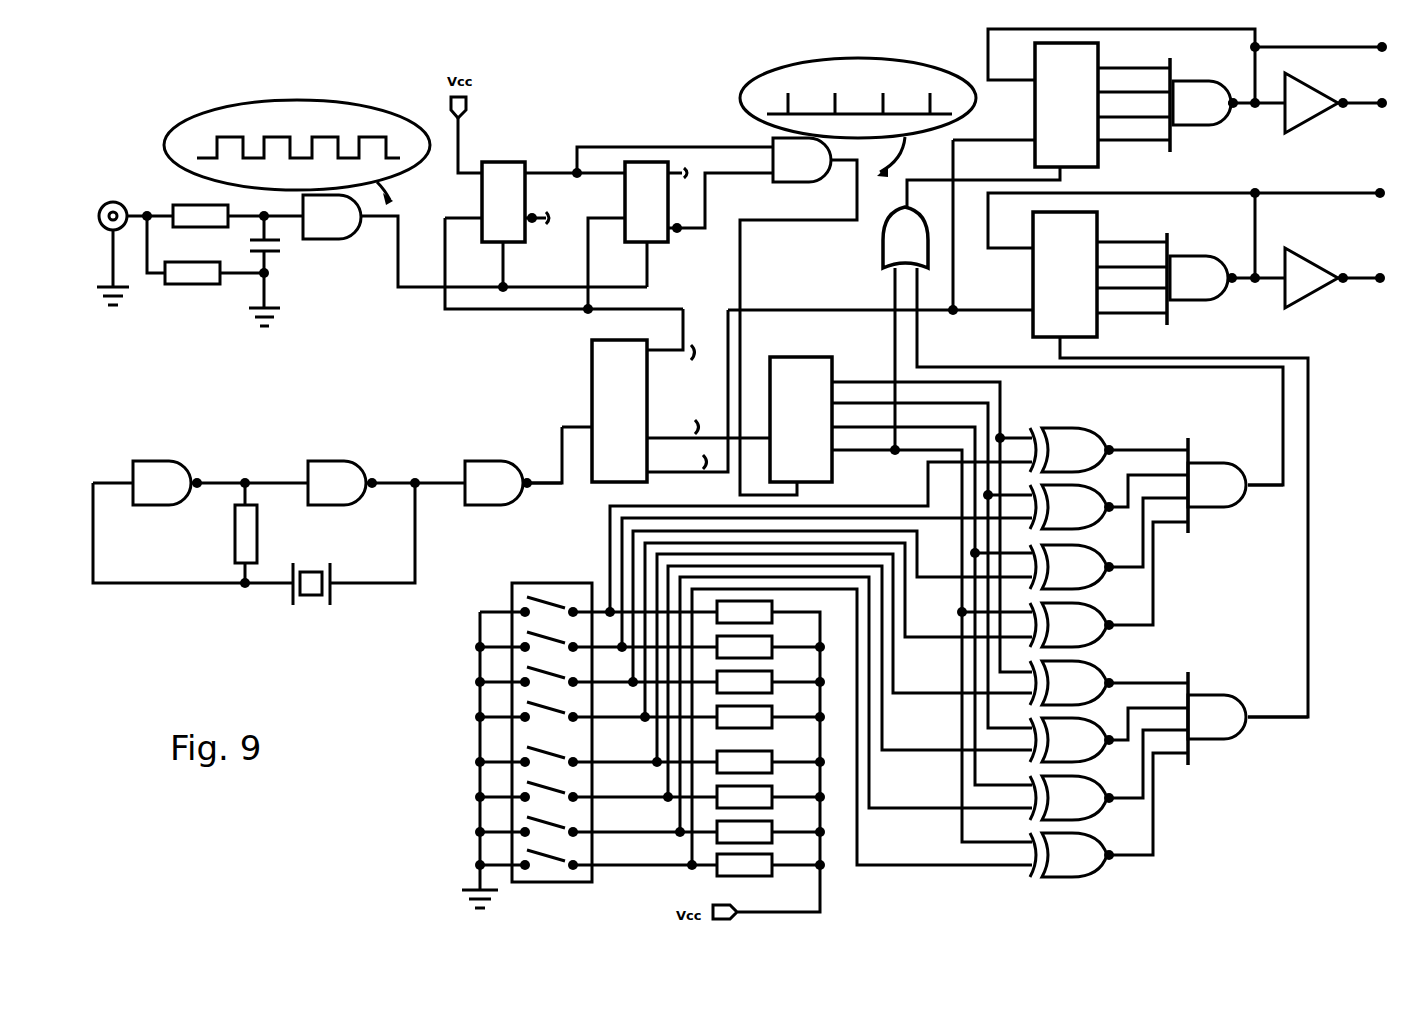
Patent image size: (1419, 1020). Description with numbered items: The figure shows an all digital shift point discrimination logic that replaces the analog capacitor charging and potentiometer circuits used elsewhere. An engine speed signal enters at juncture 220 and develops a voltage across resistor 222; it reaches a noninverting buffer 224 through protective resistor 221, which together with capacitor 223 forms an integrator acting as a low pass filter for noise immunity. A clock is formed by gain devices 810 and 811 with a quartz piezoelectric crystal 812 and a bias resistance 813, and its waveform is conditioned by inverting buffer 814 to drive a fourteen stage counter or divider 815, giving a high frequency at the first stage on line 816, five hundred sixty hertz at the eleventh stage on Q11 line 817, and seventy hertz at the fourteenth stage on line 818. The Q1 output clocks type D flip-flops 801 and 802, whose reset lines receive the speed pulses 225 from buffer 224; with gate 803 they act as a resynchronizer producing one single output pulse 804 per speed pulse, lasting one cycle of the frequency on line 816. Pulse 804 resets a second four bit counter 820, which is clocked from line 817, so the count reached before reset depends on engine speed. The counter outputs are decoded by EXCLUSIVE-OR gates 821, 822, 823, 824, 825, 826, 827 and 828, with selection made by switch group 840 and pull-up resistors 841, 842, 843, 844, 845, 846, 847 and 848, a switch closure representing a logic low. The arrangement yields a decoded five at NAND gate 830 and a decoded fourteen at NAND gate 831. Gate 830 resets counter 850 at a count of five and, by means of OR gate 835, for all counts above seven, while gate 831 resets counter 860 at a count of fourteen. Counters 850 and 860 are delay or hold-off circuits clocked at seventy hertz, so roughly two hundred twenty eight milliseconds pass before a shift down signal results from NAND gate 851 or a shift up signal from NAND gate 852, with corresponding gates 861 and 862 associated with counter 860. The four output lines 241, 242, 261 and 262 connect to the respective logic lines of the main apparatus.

The juncture 220 is at (126, 194).
The protective resistor 221 is at (210, 202).
The resistor 222 is at (209, 289).
The capacitor 223 is at (276, 257).
The noninverting buffer 224 is at (372, 252).
The speed pulse 225 is at (323, 110).
The output line 241 is at (1387, 102).
The output line 242 is at (1388, 45).
The output line 261 is at (1387, 276).
The output line 262 is at (1387, 191).
The type D flip-flop 801 is at (483, 161).
The type D flip-flop 802 is at (648, 157).
The AND gate 803 is at (812, 170).
The output pulse 804 is at (915, 78).
The gain device 810 is at (168, 470).
The gain device 811 is at (356, 470).
The quartz piezoelectric crystal 812 is at (343, 572).
The bias resistance 813 is at (257, 558).
The inverting buffer 814 is at (497, 468).
The fourteen bit counter or divider circuit 815 is at (598, 372).
The line 816 is at (673, 344).
The Q11 line 817 is at (708, 423).
The counter output Q14 818 is at (687, 391).
The second four bit counter or divider 820 is at (796, 365).
The EXCLUSIVE-OR gate 821 is at (1087, 440).
The EXCLUSIVE-OR gate 822 is at (1087, 510).
The EXCLUSIVE-OR gate 823 is at (1087, 567).
The EXCLUSIVE-OR gate 824 is at (1087, 625).
The EXCLUSIVE-OR gate 825 is at (1085, 682).
The EXCLUSIVE-OR gate 826 is at (1085, 740).
The EXCLUSIVE-OR gate 827 is at (1085, 797).
The EXCLUSIVE-OR gate 828 is at (1085, 855).
The NAND gate 830 is at (1219, 470).
The NAND gate 831 is at (1219, 705).
The OR gate 835 is at (892, 248).
The switch group 840 is at (560, 590).
The pull-up resistor 841 is at (773, 600).
The pull-up resistor 842 is at (773, 635).
The pull-up resistor 843 is at (773, 670).
The pull-up resistor 844 is at (773, 705).
The pull-up resistor 845 is at (773, 750).
The pull-up resistor 846 is at (773, 785).
The pull-up resistor 847 is at (773, 820).
The pull-up resistor 848 is at (773, 853).
The counter 850 is at (1100, 47).
The NAND gate 851 is at (1206, 94).
The NAND gate 852 is at (1310, 98).
The counter 860 is at (1100, 220).
The AND gate 861 is at (1205, 262).
The inverter 862 is at (1305, 268).